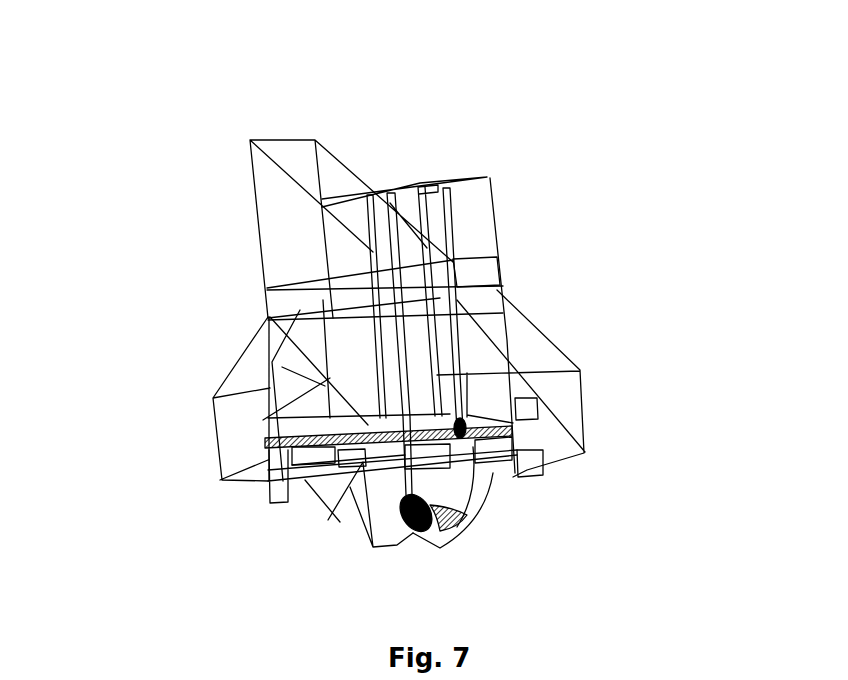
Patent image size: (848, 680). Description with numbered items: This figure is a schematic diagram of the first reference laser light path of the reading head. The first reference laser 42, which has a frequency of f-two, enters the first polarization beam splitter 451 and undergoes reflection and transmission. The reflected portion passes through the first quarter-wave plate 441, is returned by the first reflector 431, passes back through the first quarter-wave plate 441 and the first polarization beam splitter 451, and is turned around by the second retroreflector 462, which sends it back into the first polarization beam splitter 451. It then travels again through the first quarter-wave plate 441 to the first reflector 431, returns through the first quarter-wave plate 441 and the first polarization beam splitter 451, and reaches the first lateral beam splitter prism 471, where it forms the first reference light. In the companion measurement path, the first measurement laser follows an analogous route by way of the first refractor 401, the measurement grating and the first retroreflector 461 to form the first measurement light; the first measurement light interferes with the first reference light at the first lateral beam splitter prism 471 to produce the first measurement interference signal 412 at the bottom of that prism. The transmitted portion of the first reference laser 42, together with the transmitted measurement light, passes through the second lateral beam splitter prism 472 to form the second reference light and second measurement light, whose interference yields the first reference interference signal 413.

The first refractor 401 is at (310, 223).
The first reflector 431 is at (477, 210).
The first quarter-wave plate 441 is at (503, 258).
The first polarization beam splitter 451 is at (430, 342).
The first lateral beam splitter prism 471 is at (578, 378).
The second lateral beam splitter prism 472 is at (238, 418).
The first measurement interference signal 412 is at (547, 487).
The first reference interference signal 413 is at (272, 503).
The first reference laser 42 is at (490, 468).
The first retroreflector 461 is at (360, 540).
The second retroreflector 462 is at (558, 625).